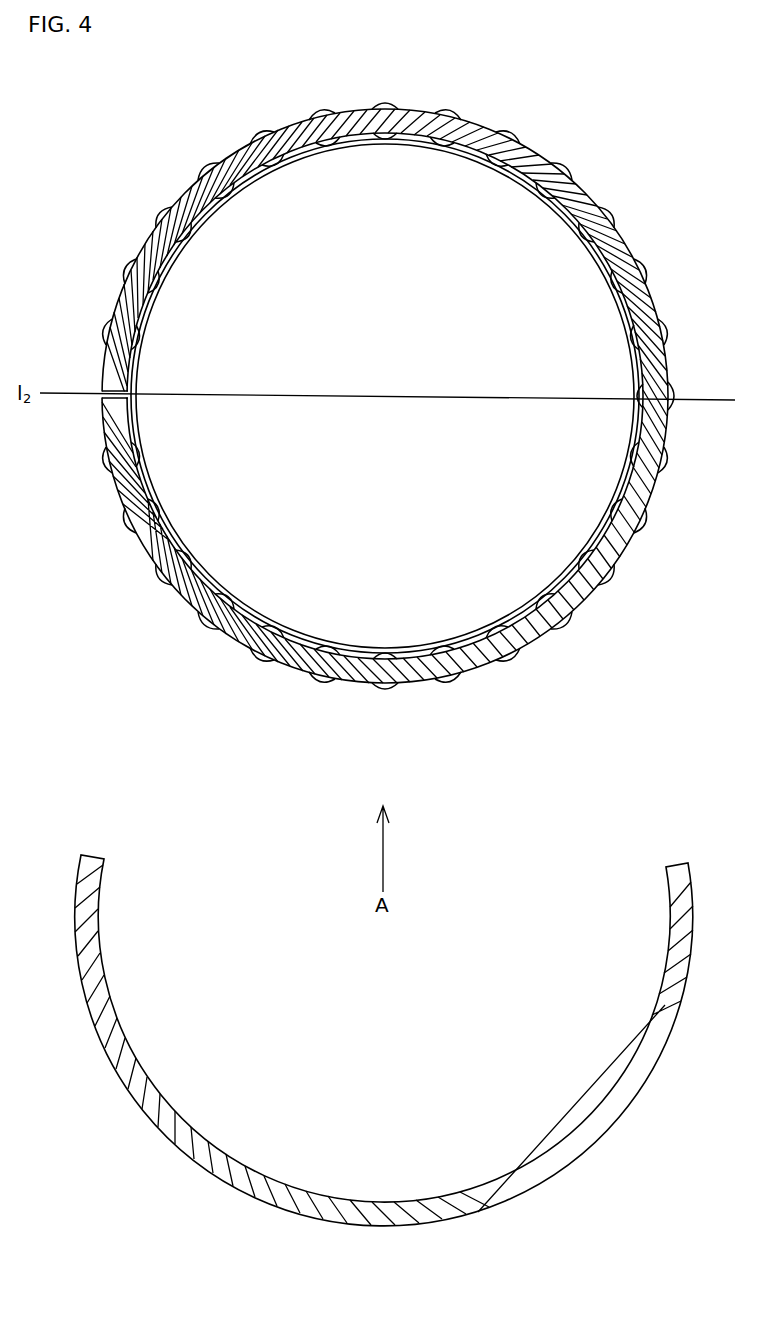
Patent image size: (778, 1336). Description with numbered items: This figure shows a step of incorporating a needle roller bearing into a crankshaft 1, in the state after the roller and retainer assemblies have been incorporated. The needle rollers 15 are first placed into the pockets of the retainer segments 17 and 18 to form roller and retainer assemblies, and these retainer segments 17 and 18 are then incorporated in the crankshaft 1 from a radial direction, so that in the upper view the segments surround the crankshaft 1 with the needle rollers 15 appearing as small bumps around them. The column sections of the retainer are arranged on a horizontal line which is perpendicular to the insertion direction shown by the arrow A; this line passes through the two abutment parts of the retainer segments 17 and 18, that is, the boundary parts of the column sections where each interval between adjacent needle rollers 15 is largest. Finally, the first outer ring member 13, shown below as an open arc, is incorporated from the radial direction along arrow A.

The crankshaft 1 is at (505, 217).
The first outer ring member 13 is at (388, 1213).
The needle rollers 15 is at (205, 168).
The retainer segment 17 is at (356, 124).
The retainer segment 18 is at (611, 548).